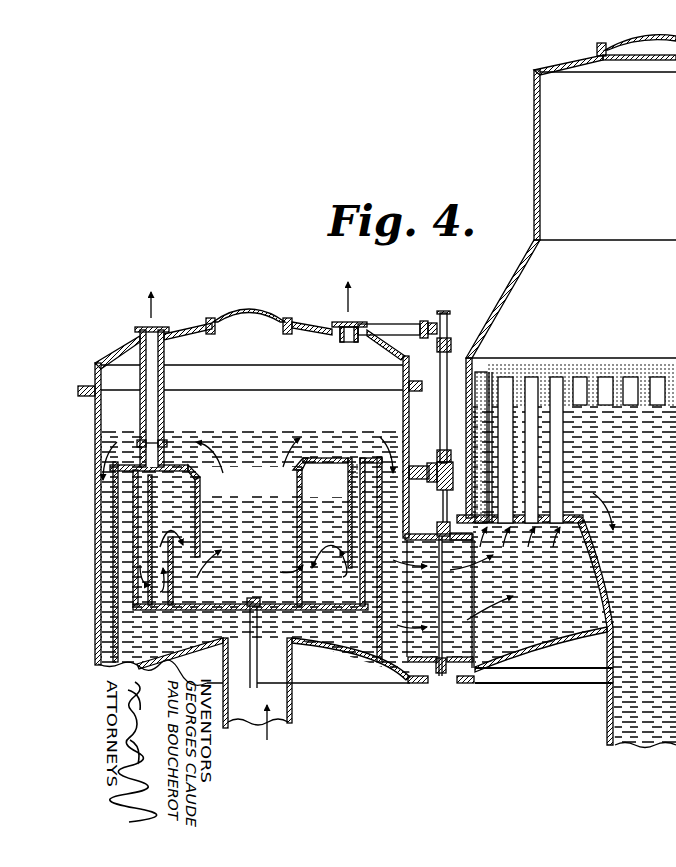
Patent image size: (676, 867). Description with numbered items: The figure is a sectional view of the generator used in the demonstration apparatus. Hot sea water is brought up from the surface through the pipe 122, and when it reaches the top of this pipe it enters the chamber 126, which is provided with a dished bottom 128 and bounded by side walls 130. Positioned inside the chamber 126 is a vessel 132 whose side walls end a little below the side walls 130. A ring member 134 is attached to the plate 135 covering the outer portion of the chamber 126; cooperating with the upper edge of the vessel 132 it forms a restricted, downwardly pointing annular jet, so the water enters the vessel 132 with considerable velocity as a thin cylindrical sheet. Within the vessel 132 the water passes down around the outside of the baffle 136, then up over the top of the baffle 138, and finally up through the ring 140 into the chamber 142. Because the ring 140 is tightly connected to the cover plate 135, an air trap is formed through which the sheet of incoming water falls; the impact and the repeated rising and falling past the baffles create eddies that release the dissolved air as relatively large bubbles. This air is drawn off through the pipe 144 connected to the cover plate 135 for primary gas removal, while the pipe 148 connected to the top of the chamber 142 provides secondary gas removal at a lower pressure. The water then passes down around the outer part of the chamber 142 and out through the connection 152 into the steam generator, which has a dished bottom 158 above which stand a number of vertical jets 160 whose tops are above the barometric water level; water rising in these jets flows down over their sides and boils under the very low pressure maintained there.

The pipe 122 is at (290, 712).
The chamber 126 is at (248, 626).
The dished bottom 128 is at (328, 642).
The side walls 130 is at (121, 657).
The vessel 132 is at (283, 610).
The ring member 134 is at (356, 466).
The plate 135 is at (306, 468).
The baffle 136 is at (335, 550).
The baffle 138 is at (177, 593).
The ring 140 is at (201, 522).
The chamber 142 is at (255, 537).
The pipe 144 is at (140, 334).
The pipe 148 is at (347, 320).
The connection 152 is at (433, 662).
The dished bottom 158 is at (550, 640).
The vertical jets 160 is at (553, 376).